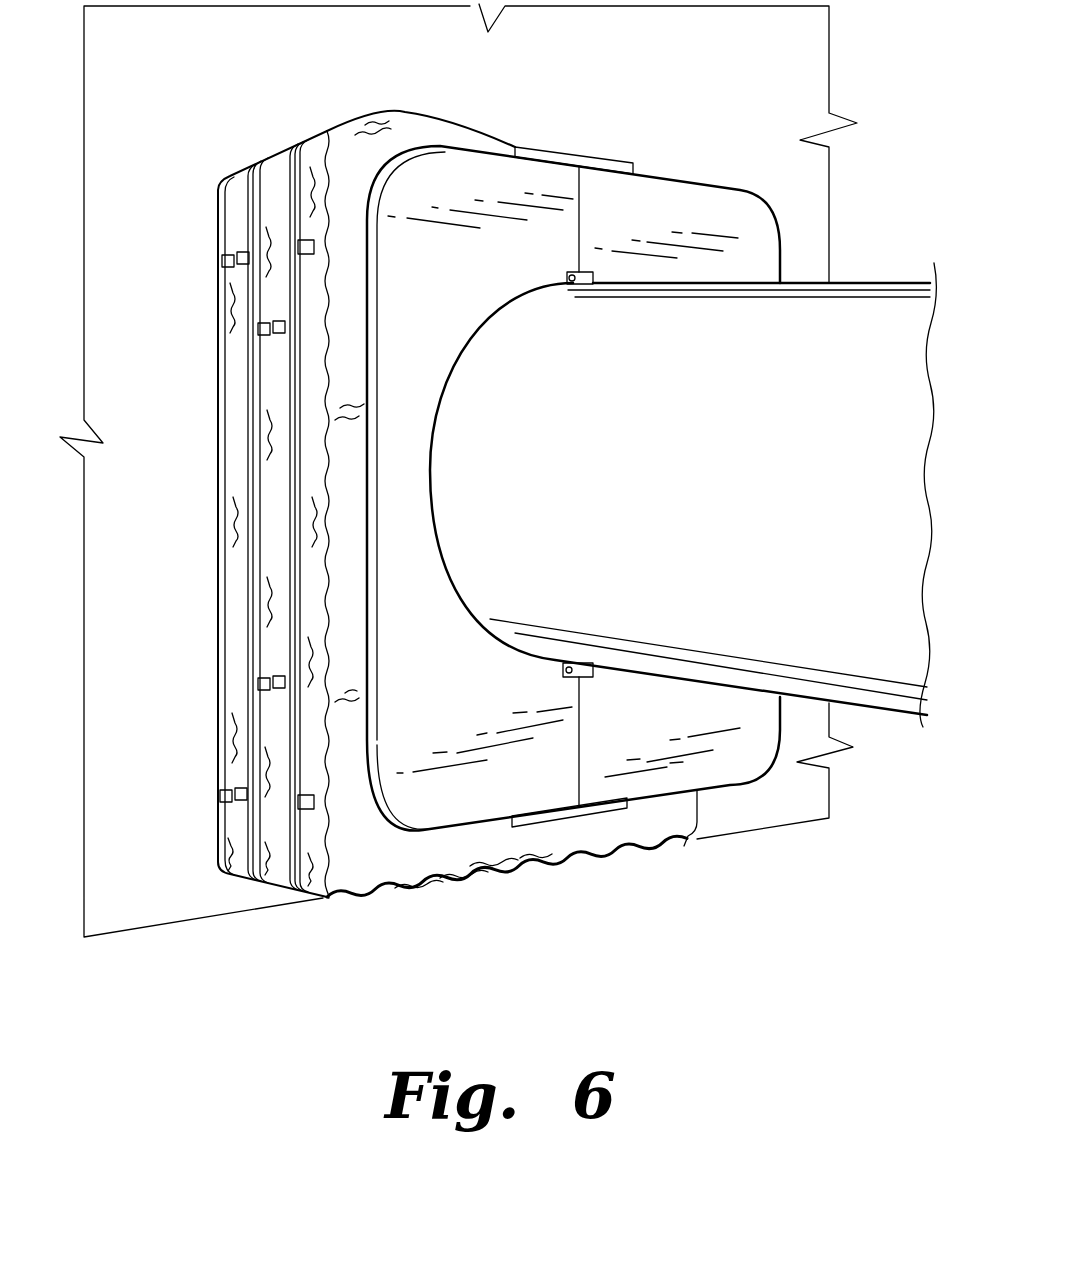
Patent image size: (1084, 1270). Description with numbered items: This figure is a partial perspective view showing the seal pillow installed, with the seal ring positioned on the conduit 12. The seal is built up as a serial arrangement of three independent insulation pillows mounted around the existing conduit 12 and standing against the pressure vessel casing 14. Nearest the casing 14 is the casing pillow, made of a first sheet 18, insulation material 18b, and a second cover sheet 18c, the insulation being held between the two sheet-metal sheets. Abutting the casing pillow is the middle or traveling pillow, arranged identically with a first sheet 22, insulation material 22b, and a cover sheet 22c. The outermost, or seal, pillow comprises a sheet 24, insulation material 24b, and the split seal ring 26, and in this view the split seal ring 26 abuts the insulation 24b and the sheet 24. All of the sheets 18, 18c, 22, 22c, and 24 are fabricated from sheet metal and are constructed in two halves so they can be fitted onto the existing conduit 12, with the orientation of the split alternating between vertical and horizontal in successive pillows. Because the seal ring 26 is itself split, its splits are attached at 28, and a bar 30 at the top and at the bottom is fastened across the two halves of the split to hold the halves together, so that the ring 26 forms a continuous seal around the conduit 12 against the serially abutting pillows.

The conduit 12 is at (553, 496).
The pressure vessel casing 14 is at (170, 67).
The first sheet 18 is at (217, 752).
The insulation material 18b is at (233, 670).
The second cover sheet 18c is at (247, 483).
The first sheet 22 is at (257, 575).
The insulation material 22b is at (268, 383).
The cover sheet 22c is at (293, 302).
The sheet 24 is at (292, 143).
The insulation material 24b is at (412, 861).
The split seal ring 26 is at (462, 704).
The seal ring split attachment 28 is at (567, 277).
The bar 30 is at (607, 152).